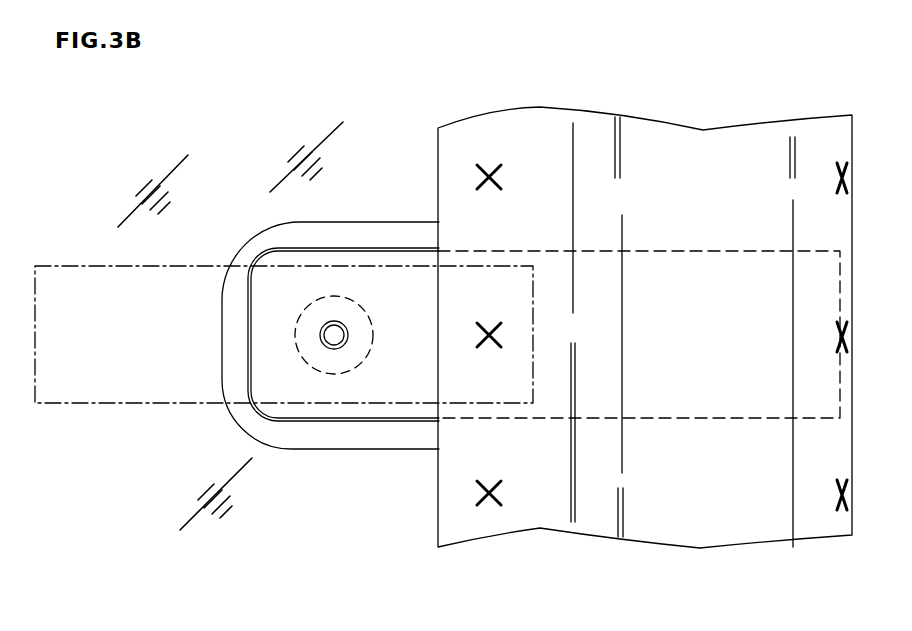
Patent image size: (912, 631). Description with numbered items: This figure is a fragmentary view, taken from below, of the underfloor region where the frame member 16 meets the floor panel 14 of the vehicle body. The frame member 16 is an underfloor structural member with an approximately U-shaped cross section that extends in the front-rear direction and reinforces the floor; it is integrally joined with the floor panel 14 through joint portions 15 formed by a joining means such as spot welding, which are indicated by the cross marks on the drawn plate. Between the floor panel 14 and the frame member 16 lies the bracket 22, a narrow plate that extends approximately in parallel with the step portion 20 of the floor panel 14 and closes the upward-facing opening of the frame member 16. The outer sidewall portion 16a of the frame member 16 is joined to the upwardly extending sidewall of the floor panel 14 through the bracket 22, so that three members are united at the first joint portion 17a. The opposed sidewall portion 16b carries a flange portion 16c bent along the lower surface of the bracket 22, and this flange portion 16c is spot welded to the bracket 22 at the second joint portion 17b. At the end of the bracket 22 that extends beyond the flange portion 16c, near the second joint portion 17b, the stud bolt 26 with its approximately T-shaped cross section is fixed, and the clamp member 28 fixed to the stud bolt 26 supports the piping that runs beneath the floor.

The floor panel 14 is at (156, 467).
The joint portions 15 is at (489, 170).
The frame member 16 is at (436, 492).
The sidewall portion 16a is at (812, 493).
The sidewall portion 16b is at (600, 480).
The flange portion 16c is at (537, 492).
The first joint portion 17a is at (837, 332).
The second joint portion 17b is at (500, 333).
The step portion 20 is at (233, 340).
The bracket 22 is at (393, 256).
The stud bolt 26 is at (335, 320).
The clamp member 28 is at (70, 266).